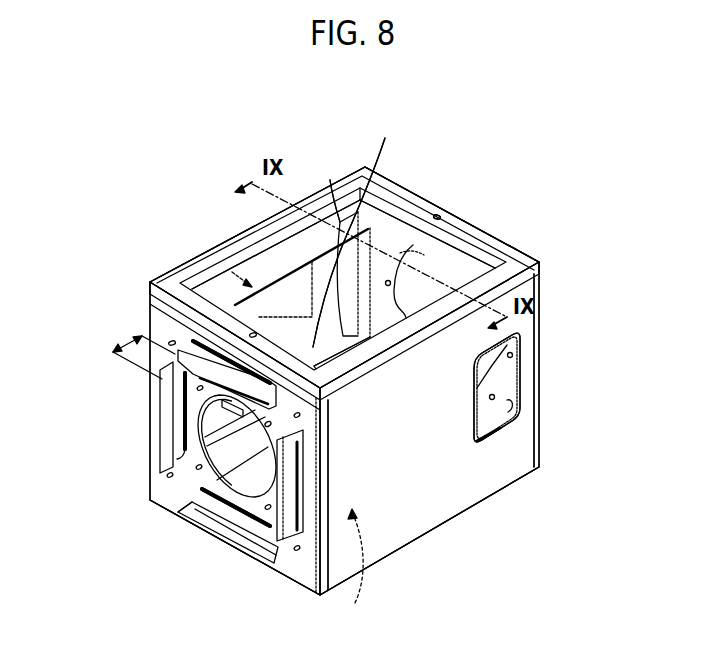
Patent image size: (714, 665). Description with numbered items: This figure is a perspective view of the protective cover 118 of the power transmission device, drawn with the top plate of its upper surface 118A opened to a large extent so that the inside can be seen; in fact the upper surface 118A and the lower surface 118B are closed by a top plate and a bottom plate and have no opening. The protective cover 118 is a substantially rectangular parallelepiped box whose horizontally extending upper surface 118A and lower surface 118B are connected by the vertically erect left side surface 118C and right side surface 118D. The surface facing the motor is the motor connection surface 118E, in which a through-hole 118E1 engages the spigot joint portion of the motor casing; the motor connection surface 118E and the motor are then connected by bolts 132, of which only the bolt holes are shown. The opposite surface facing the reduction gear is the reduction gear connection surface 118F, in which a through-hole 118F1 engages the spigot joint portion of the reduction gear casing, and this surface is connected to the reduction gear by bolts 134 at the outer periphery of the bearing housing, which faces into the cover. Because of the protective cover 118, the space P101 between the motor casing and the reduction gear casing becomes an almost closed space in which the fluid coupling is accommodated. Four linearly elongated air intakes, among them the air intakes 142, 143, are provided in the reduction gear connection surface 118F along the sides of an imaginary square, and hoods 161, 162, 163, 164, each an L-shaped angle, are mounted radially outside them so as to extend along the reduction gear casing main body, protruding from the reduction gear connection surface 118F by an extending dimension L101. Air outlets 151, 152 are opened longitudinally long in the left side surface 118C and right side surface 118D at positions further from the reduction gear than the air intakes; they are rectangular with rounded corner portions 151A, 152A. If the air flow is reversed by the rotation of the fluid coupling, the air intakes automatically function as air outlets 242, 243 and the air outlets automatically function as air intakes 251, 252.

The protective cover 118 is at (439, 203).
The upper surface 118A is at (316, 240).
The lower surface 118B is at (300, 477).
The left side surface 118C is at (487, 475).
The right side surface 118D is at (228, 270).
The motor connection surface 118E is at (495, 252).
The through-hole 118E1 is at (462, 232).
The reduction gear connection surface 118F is at (303, 569).
The through-hole 118F1 is at (192, 506).
The bolts 132 is at (394, 285).
The bolts 134 is at (271, 421).
The air intake 142 is at (196, 377).
The air outlet 242 is at (150, 395).
The air intake 143 is at (257, 505).
The air outlet 243 is at (226, 545).
The air outlet 151 is at (520, 415).
The air intake 251 is at (562, 387).
The corner portion 151A is at (481, 438).
The air outlet 152 is at (386, 233).
The air intake 252 is at (386, 233).
The corner portion 152A is at (326, 252).
The hood 161 is at (187, 350).
The hood 162 is at (167, 410).
The hood 163 is at (224, 531).
The hood 164 is at (360, 567).
The extending dimension L101 is at (119, 345).
The space P101 is at (300, 273).